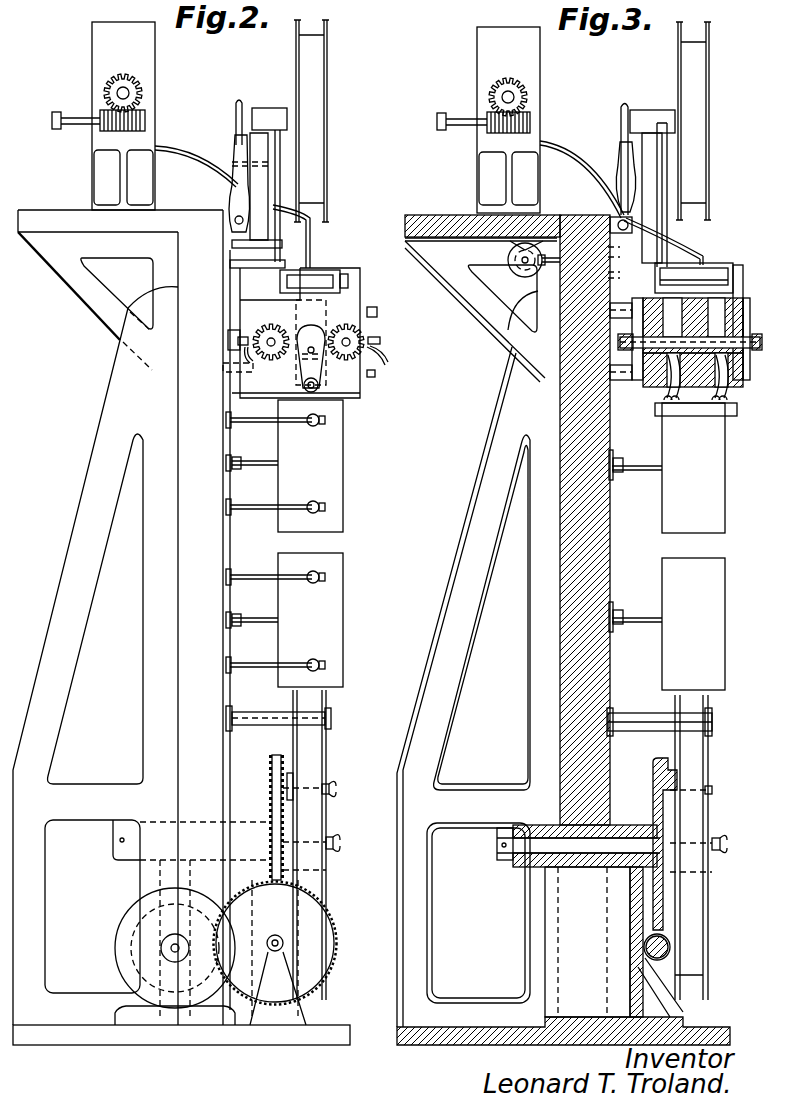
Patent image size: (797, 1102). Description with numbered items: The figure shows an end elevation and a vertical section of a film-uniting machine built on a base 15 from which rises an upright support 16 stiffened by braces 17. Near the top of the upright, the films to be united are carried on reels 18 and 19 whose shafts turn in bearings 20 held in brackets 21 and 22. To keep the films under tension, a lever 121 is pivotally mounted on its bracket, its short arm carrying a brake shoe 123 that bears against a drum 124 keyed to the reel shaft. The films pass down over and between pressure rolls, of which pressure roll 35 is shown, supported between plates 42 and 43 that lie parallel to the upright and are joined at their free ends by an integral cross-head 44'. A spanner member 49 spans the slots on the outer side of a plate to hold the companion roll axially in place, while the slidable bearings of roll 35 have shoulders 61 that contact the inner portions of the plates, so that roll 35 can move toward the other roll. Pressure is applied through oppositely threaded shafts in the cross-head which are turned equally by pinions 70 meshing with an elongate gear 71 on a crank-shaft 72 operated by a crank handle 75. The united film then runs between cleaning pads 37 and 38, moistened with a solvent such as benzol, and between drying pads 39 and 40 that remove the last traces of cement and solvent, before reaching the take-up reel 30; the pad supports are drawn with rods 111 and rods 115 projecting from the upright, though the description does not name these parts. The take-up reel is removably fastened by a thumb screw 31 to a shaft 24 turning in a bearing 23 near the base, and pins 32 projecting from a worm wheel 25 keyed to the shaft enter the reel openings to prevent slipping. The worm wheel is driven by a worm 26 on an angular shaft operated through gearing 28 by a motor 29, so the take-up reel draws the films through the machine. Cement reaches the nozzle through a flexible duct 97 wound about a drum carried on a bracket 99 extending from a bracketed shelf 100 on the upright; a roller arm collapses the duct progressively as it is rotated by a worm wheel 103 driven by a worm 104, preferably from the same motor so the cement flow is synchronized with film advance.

In FIG. 2, the base 15 is at (245, 1040).
In FIG. 3, the base 15 is at (472, 1040).
In FIG. 2, the upright support 16 is at (200, 682).
In FIG. 3, the upright support 16 is at (590, 557).
In FIG. 2, the braces 17 is at (73, 580).
In FIG. 3, the braces 17 is at (463, 573).
In FIG. 2, the reel 18 is at (330, 72).
In FIG. 3, the reel 19 is at (712, 68).
In FIG. 2, the bearings 20 is at (260, 115).
In FIG. 3, the bearings 20 is at (647, 117).
In FIG. 2, the bracket 21 is at (263, 245).
In FIG. 3, the bracket 22 is at (650, 198).
In FIG. 3, the bearing 23 is at (600, 847).
In FIG. 3, the shaft 24 is at (570, 847).
In FIG. 2, the worm wheel 25 is at (270, 775).
In FIG. 3, the worm wheel 25 is at (655, 775).
In FIG. 3, the worm 26 is at (660, 958).
In FIG. 2, the gearing 28 is at (320, 925).
In FIG. 2, the motor 29 is at (120, 957).
In FIG. 2, the take-up reel 30 is at (317, 757).
In FIG. 3, the take-up reel 30 is at (693, 905).
In FIG. 2, the thumb screw 31 is at (325, 790).
In FIG. 3, the thumb screw 31 is at (715, 838).
In FIG. 3, the pins 32 is at (712, 790).
In FIG. 3, the pressure roll 35 is at (703, 378).
In FIG. 2, the cleaning pad 37 is at (325, 469).
In FIG. 3, the cleaning pad 38 is at (712, 483).
In FIG. 2, the drying pad 39 is at (327, 644).
In FIG. 3, the drying pad 40 is at (705, 628).
In FIG. 3, the plate 42 is at (645, 303).
In FIG. 3, the plate 43 is at (737, 310).
In FIG. 2, the cross-head 44' is at (358, 339).
In FIG. 2, the spanner member 49 is at (368, 318).
In FIG. 3, the spanner member 49 is at (747, 322).
In FIG. 3, the shoulders 61 is at (737, 380).
In FIG. 2, the pinions 70 is at (273, 326).
In FIG. 2, the elongate gear 71 is at (333, 338).
In FIG. 2, the crank-shaft 72 is at (311, 346).
In FIG. 2, the crank handle 75 is at (312, 390).
In FIG. 2, the flexible duct 97 is at (193, 165).
In FIG. 3, the flexible duct 97 is at (600, 180).
In FIG. 2, the bracket 99 is at (143, 60).
In FIG. 3, the bracket 99 is at (528, 65).
In FIG. 2, the bracketed shelf 100 is at (52, 220).
In FIG. 3, the bracketed shelf 100 is at (450, 218).
In FIG. 2, the worm wheel 103 is at (107, 82).
In FIG. 3, the worm wheel 103 is at (492, 88).
In FIG. 2, the worm 104 is at (113, 130).
In FIG. 3, the worm 104 is at (503, 133).
In FIG. 2, the rod 111 is at (268, 422).
In FIG. 2, the rod 115 is at (263, 467).
In FIG. 3, the rod 115 is at (645, 480).
In FIG. 2, the lever 121 is at (242, 187).
In FIG. 2, the brake shoes 123 is at (238, 133).
In FIG. 2, the drums 124 is at (238, 100).
In FIG. 3, the drums 124 is at (620, 127).